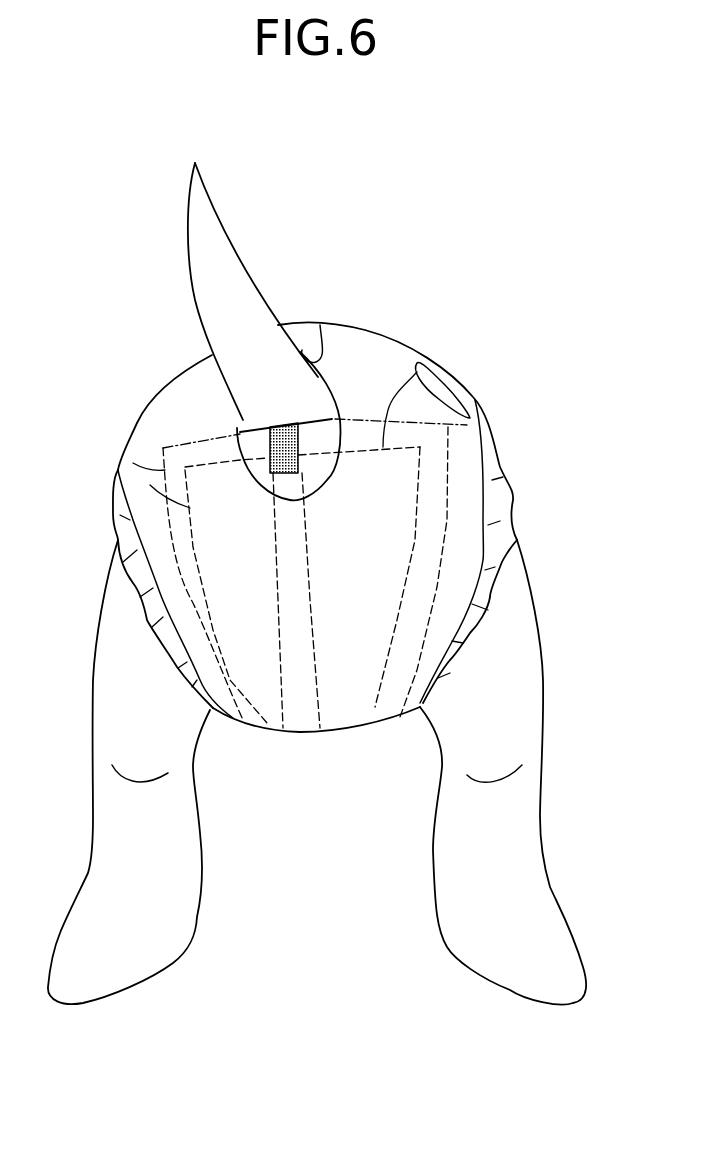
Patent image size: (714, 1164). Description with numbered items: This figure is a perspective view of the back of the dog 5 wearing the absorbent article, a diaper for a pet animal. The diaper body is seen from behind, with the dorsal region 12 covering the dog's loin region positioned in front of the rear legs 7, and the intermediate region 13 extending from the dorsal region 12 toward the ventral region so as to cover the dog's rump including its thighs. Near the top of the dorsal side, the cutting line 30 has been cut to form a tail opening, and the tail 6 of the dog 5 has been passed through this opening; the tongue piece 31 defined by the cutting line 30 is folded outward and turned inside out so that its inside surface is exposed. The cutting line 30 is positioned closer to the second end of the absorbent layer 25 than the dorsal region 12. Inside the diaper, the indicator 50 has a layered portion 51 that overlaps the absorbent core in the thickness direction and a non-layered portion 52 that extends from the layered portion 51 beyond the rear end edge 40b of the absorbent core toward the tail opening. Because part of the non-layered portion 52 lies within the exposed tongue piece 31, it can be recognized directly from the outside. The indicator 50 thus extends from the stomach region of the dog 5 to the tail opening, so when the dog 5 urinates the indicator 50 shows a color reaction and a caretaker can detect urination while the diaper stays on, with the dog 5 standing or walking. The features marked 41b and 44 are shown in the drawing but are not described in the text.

The dog 5 is at (513, 690).
The tail 6 is at (207, 275).
The rear legs 7 is at (167, 922).
The dorsal region 12 is at (365, 350).
The intermediate region 13 is at (467, 535).
The absorbent layer 25 is at (283, 732).
The cutting line 30 is at (320, 325).
The tongue piece 31 is at (255, 482).
The rear end edge 40b is at (420, 377).
The inner pocket 41b is at (205, 458).
The holding pocket 44 is at (220, 443).
The indicator 50 is at (347, 641).
The layered portion 51 is at (320, 732).
The non-layered portion 52 is at (300, 448).